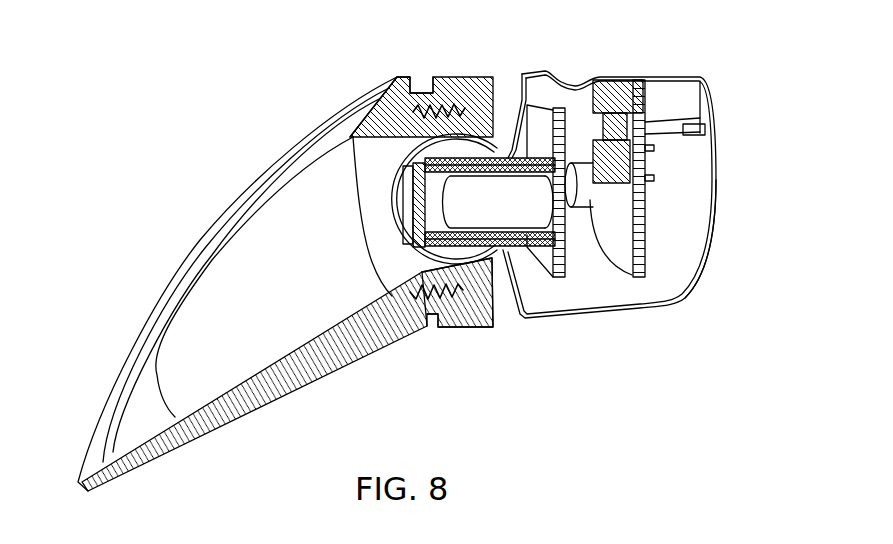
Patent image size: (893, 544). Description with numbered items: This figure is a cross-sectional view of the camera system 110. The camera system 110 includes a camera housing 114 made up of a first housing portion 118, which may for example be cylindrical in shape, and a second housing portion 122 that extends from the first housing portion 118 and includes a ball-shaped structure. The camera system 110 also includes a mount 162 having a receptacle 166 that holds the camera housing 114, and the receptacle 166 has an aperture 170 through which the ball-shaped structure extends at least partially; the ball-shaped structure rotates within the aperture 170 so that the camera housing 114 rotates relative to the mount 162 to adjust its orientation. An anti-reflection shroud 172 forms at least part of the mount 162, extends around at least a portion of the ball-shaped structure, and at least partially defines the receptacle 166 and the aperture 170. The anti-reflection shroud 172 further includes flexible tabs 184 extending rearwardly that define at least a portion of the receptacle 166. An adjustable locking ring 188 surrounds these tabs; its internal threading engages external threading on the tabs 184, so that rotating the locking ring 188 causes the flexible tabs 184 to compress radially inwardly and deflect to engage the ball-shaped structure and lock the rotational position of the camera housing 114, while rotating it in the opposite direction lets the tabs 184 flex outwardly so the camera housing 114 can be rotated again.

The camera system 110 is at (139, 192).
The camera housing 114 is at (675, 58).
The first housing portion 118 is at (720, 246).
The second housing portion 122 is at (500, 131).
The mount 162 is at (114, 330).
The receptacle 166 is at (407, 64).
The aperture 170 is at (383, 123).
The anti-reflection shroud 172 is at (127, 402).
The flexible tabs 184 is at (448, 77).
The adjustable locking ring 188 is at (484, 338).